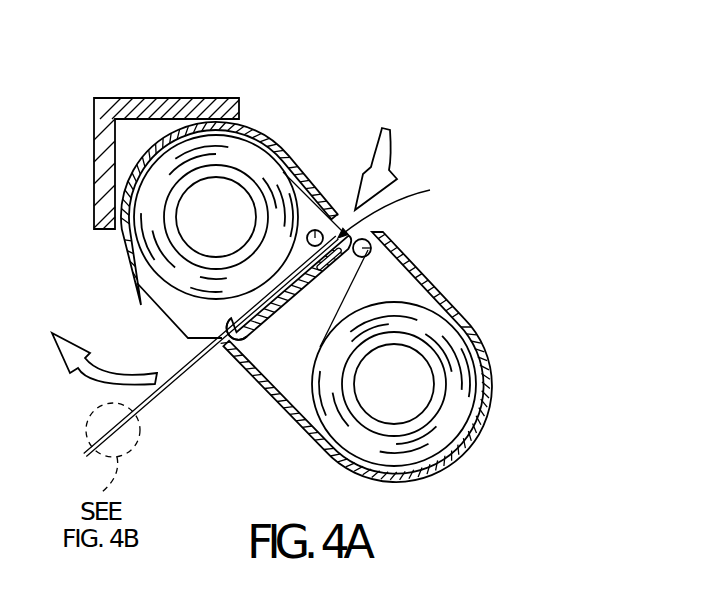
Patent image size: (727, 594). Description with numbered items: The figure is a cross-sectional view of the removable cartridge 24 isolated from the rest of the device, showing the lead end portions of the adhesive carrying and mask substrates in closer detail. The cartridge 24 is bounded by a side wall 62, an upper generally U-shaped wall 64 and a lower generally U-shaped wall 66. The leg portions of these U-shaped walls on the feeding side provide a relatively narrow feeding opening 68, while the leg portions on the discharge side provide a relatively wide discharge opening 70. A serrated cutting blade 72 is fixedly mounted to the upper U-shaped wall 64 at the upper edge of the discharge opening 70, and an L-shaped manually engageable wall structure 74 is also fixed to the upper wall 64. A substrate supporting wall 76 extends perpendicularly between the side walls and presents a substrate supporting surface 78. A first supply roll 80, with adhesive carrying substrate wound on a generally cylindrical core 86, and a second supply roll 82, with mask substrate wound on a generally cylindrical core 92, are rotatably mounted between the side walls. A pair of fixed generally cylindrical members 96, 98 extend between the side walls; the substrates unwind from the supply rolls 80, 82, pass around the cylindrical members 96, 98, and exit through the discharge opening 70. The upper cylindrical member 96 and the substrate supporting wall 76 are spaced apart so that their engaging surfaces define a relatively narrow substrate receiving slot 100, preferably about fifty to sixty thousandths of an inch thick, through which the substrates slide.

The removable cartridge 24 is at (408, 258).
The side wall 62 is at (178, 318).
The upper generally U-shaped wall 64 is at (270, 133).
The lower generally U-shaped wall 66 is at (460, 313).
The feeding opening 68 is at (340, 210).
The discharge opening 70 is at (202, 330).
The serrated cutting blade 72 is at (137, 287).
The L-shaped manually engageable wall structure 74 is at (128, 105).
The substrate supporting wall 76 is at (297, 295).
The substrate supporting surface 78 is at (228, 330).
The first supply roll 80 is at (462, 385).
The second supply roll 82 is at (148, 185).
The generally cylindrical core 86 is at (430, 408).
The generally cylindrical core 92 is at (250, 197).
The fixed generally cylindrical member 96 is at (318, 229).
The fixed generally cylindrical member 98 is at (372, 242).
The substrate receiving slot 100 is at (402, 203).